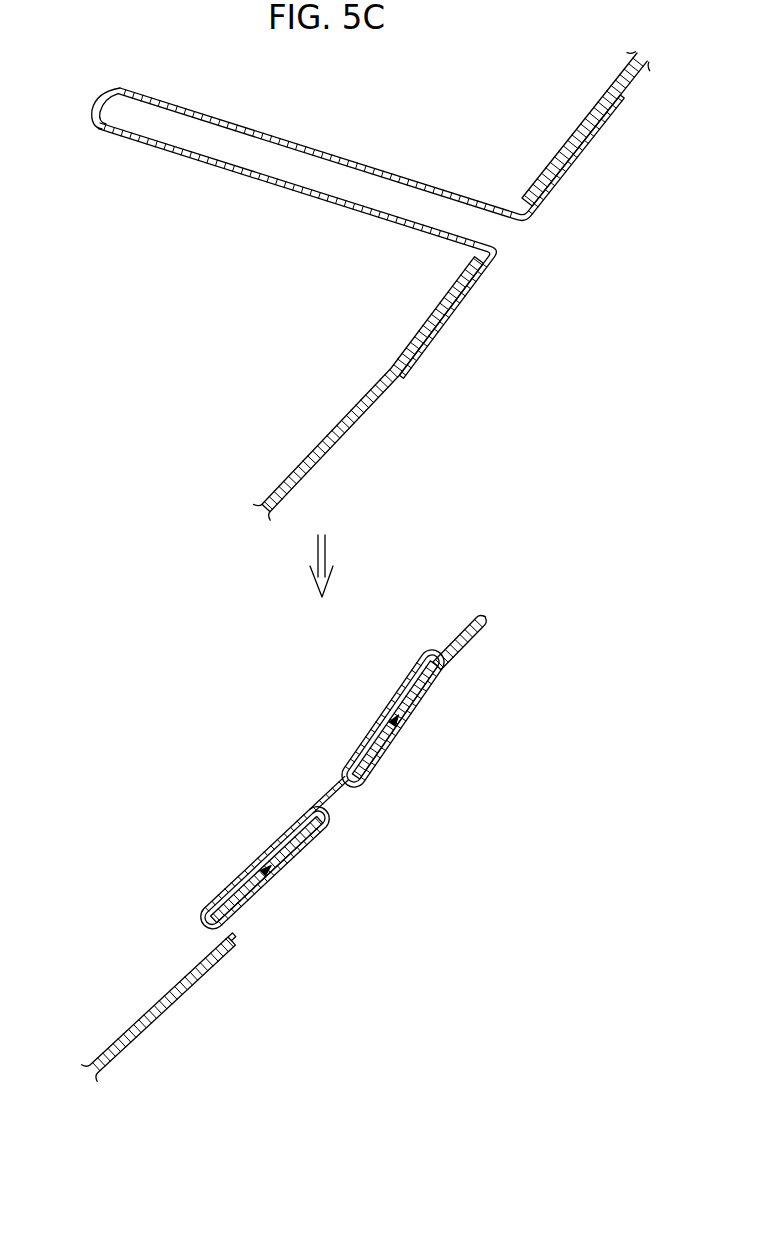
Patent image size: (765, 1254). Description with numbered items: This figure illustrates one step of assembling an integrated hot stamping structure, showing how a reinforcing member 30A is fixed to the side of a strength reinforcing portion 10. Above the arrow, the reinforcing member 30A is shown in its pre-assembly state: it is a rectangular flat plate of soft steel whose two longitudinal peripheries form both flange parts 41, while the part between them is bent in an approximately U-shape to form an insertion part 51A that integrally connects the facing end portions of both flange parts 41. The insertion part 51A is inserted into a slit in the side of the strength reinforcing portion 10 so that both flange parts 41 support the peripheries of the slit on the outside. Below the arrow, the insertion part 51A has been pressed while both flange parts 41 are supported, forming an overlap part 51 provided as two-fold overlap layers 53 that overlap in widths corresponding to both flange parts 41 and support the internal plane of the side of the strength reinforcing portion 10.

The strength reinforcing portion 10 is at (356, 401).
The reinforcing member 30A is at (345, 206).
The flange parts 41 is at (572, 164).
The overlap part 51 is at (249, 844).
The insertion part 51A is at (279, 137).
The overlap layers 53 is at (300, 807).